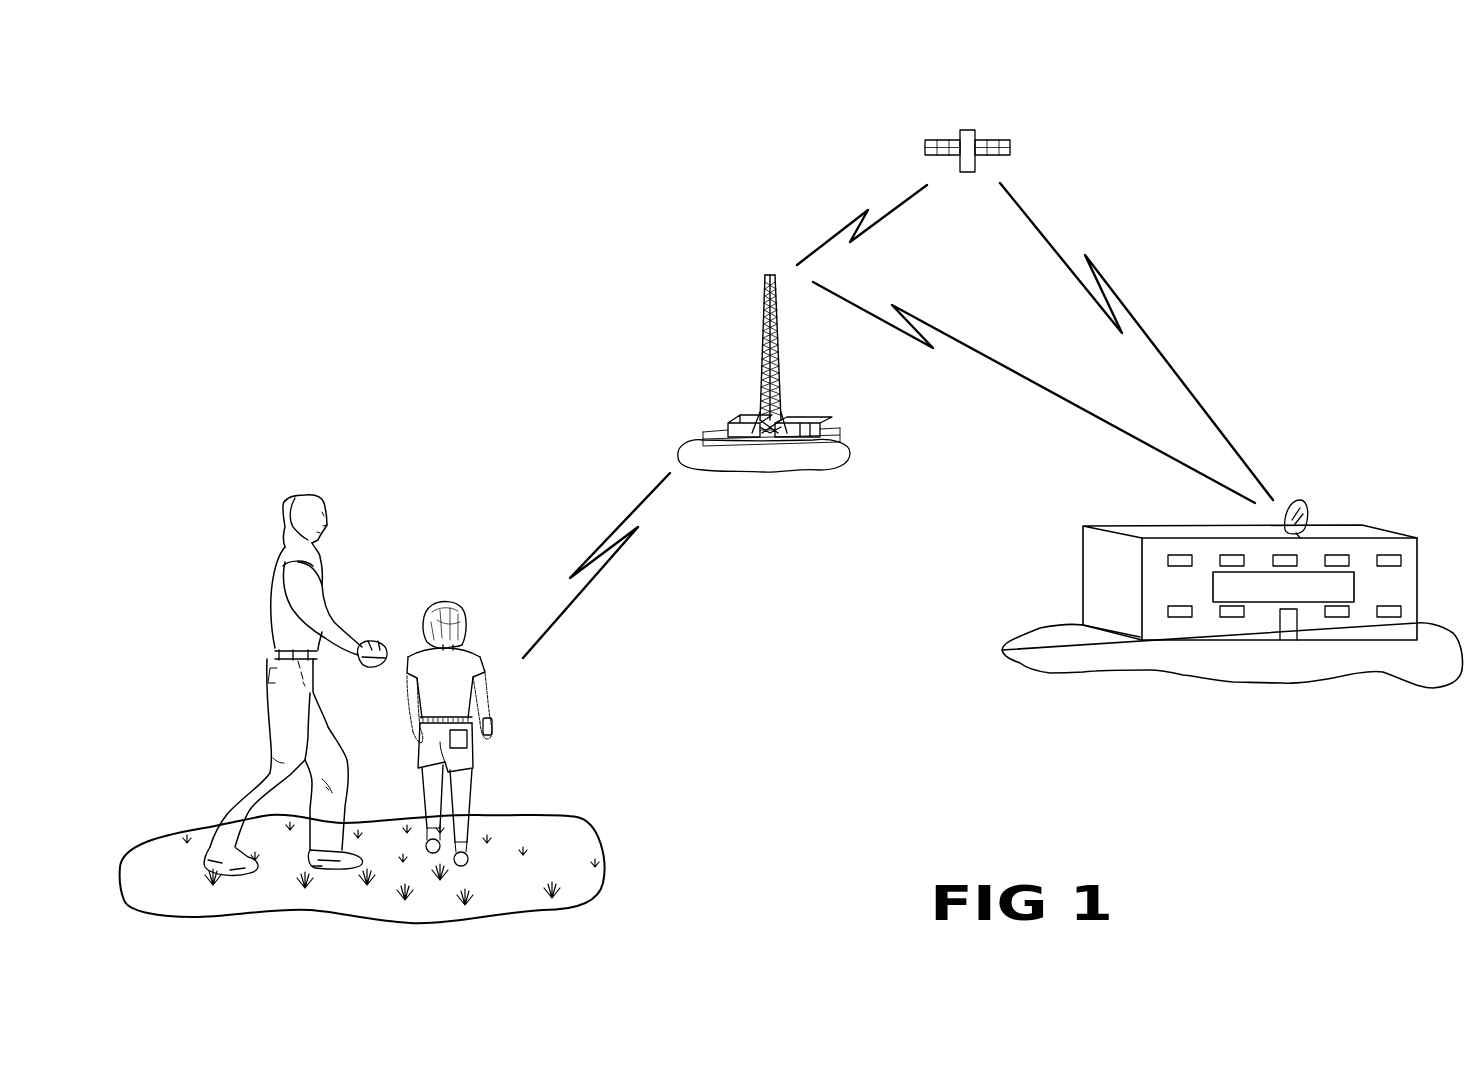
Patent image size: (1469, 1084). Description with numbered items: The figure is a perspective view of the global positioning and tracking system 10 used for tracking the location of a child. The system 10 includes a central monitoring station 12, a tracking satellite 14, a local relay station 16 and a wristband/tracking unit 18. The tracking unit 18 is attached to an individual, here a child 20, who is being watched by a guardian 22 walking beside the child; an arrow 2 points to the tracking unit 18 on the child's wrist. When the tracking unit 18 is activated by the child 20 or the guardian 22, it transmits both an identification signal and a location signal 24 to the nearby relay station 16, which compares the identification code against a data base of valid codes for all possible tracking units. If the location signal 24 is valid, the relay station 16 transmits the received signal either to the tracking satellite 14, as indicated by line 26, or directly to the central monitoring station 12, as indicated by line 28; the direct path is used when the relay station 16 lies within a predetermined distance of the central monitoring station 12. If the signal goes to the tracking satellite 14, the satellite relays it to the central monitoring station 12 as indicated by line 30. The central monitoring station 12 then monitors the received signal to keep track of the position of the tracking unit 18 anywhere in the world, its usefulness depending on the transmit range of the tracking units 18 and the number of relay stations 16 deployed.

The child monitoring device arrangement 2 is at (497, 719).
The global positioning and tracking system 10 is at (581, 340).
The central monitoring station 12 is at (1338, 532).
The tracking satellite 14 is at (957, 133).
The local relay station 16 is at (778, 384).
The wristband/tracking unit 18 is at (490, 731).
The child 20 is at (482, 655).
The guardian 22 is at (300, 495).
The location signal 24 is at (622, 511).
The line indicating transmission to tracking satellite 26 is at (850, 226).
The line indicating transmission to central monitoring station 28 is at (1003, 369).
The line indicating satellite relay to central monitoring station 30 is at (1128, 305).